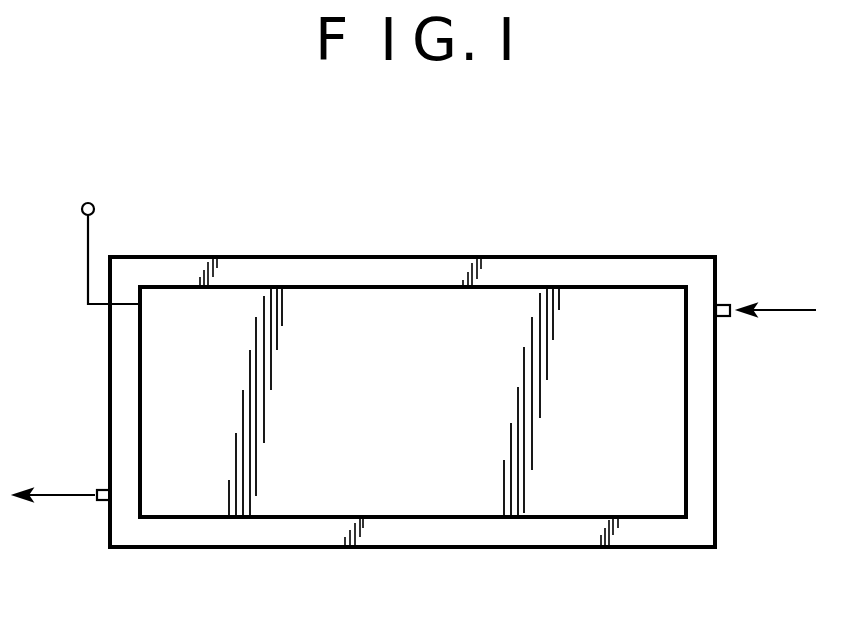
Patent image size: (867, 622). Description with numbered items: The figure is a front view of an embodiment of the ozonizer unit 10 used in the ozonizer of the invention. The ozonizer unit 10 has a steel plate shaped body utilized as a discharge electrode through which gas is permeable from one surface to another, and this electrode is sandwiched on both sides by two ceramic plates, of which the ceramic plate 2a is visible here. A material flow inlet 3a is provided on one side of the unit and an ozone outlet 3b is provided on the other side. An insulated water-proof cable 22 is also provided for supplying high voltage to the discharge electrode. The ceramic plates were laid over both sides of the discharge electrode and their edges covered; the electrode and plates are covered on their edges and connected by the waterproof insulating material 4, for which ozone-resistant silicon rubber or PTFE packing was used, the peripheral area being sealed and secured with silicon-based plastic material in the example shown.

The ozonizer unit 10 is at (437, 245).
The waterproof insulating material 4 is at (470, 533).
The ceramic plate 2a is at (322, 493).
The insulated water-proof cable 22 is at (86, 240).
The material flow inlet 3a is at (722, 317).
The ozone outlet 3b is at (100, 501).